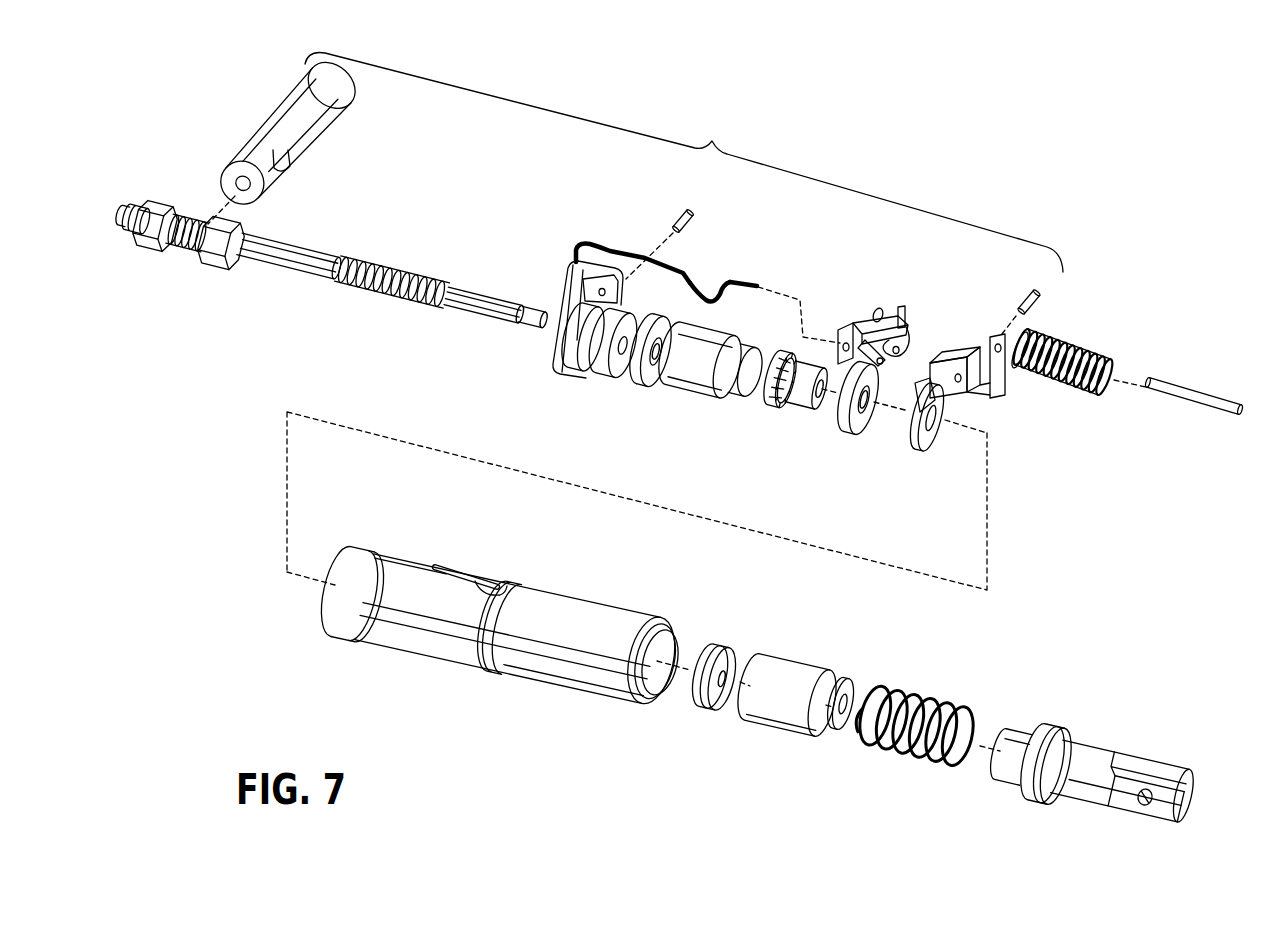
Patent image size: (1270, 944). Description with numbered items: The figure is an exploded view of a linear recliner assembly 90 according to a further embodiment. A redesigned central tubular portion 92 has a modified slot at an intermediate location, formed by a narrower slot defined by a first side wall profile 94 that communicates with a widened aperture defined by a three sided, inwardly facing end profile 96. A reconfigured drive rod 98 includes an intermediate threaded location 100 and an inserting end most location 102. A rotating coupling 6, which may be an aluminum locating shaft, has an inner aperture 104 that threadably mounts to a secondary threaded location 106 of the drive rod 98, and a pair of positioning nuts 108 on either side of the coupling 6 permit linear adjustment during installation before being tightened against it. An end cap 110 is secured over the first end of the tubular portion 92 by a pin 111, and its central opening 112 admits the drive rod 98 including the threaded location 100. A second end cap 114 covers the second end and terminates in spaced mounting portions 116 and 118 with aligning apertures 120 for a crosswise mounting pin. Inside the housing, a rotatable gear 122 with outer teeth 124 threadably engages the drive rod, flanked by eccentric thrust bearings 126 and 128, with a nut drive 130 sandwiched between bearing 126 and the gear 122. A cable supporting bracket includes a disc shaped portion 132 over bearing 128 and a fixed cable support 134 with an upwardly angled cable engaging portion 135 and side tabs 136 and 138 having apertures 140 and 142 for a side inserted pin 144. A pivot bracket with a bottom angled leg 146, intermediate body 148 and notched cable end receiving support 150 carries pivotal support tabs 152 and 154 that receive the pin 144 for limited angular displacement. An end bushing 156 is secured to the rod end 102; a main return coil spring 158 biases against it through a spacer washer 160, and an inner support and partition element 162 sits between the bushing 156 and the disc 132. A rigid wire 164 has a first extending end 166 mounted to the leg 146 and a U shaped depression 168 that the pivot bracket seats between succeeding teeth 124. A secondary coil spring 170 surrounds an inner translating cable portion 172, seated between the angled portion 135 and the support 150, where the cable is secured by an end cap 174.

The rotating coupling 6 is at (338, 112).
The linear recliner assembly 90 is at (684, 162).
The central tubular portion 92 is at (441, 638).
The first side wall profile 94 is at (463, 577).
The three sided inwardly facing end profile 96 is at (503, 586).
The drive rod 98 is at (284, 268).
The intermediate threaded location 100 is at (384, 272).
The inserting end most location 102 is at (525, 328).
The inner aperture 104 is at (286, 164).
The secondary threaded location 106 is at (190, 214).
The positioning nuts 108 is at (221, 265).
The end cap 110 is at (565, 370).
The pin 111 is at (679, 214).
The central opening 112 is at (666, 362).
The second end cap 114 is at (1083, 752).
The mounting portion 116 is at (1160, 817).
The mounting portion 118 is at (1193, 787).
The aligning apertures 120 is at (1137, 796).
The rotatable gear 122 is at (794, 413).
The teeth 124 is at (780, 414).
The thrust bearing 126 is at (650, 308).
The thrust bearing 128 is at (847, 385).
The nut drive 130 is at (700, 393).
The disc shaped portion 132 is at (917, 447).
The fixed cable support 134 is at (976, 393).
The upwardly angled cable engaging portion 135 is at (1020, 350).
The side tab 136 is at (943, 357).
The side tab 138 is at (990, 343).
The aperture 140 is at (966, 400).
The aperture 142 is at (990, 376).
The pin 144 is at (1034, 304).
The bottom angled leg 146 is at (838, 338).
The intermediate body 148 is at (855, 322).
The notched cable end receiving support 150 is at (906, 318).
The pivotal support tab 152 is at (884, 370).
The pivotal support tab 154 is at (910, 345).
The end bushing 156 is at (787, 670).
The return coil spring 158 is at (907, 760).
The spacer washer 160 is at (843, 681).
The inner support and partition element 162 is at (710, 713).
The wire 164 is at (627, 262).
The first extending end 166 is at (740, 280).
The U shaped depression 168 is at (714, 304).
The secondary coil spring 170 is at (1091, 357).
The inner translating portion of cable 172 is at (1172, 391).
The end cap 174 is at (881, 310).